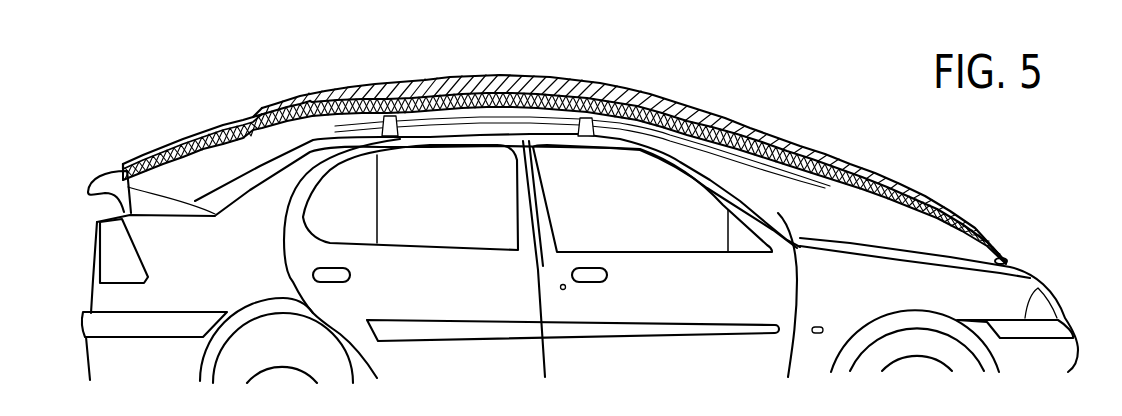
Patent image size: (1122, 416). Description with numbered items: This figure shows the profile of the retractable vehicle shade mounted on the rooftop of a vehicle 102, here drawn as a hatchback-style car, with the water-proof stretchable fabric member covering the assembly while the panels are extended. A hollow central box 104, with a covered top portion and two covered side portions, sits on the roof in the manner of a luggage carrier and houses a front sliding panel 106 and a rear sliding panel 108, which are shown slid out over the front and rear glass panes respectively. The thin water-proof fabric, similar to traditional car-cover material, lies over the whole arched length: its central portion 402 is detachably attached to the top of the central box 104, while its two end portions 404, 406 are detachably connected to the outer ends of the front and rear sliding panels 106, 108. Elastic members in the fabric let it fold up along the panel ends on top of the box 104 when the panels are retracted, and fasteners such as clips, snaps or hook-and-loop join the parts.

The vehicle 102 is at (808, 265).
The hollow central box 104 is at (562, 88).
The front sliding panel 106 is at (967, 237).
The rear sliding panel 108 is at (251, 116).
The central portion 402 is at (475, 90).
The end portion 404 is at (888, 188).
The end portion 406 is at (215, 132).